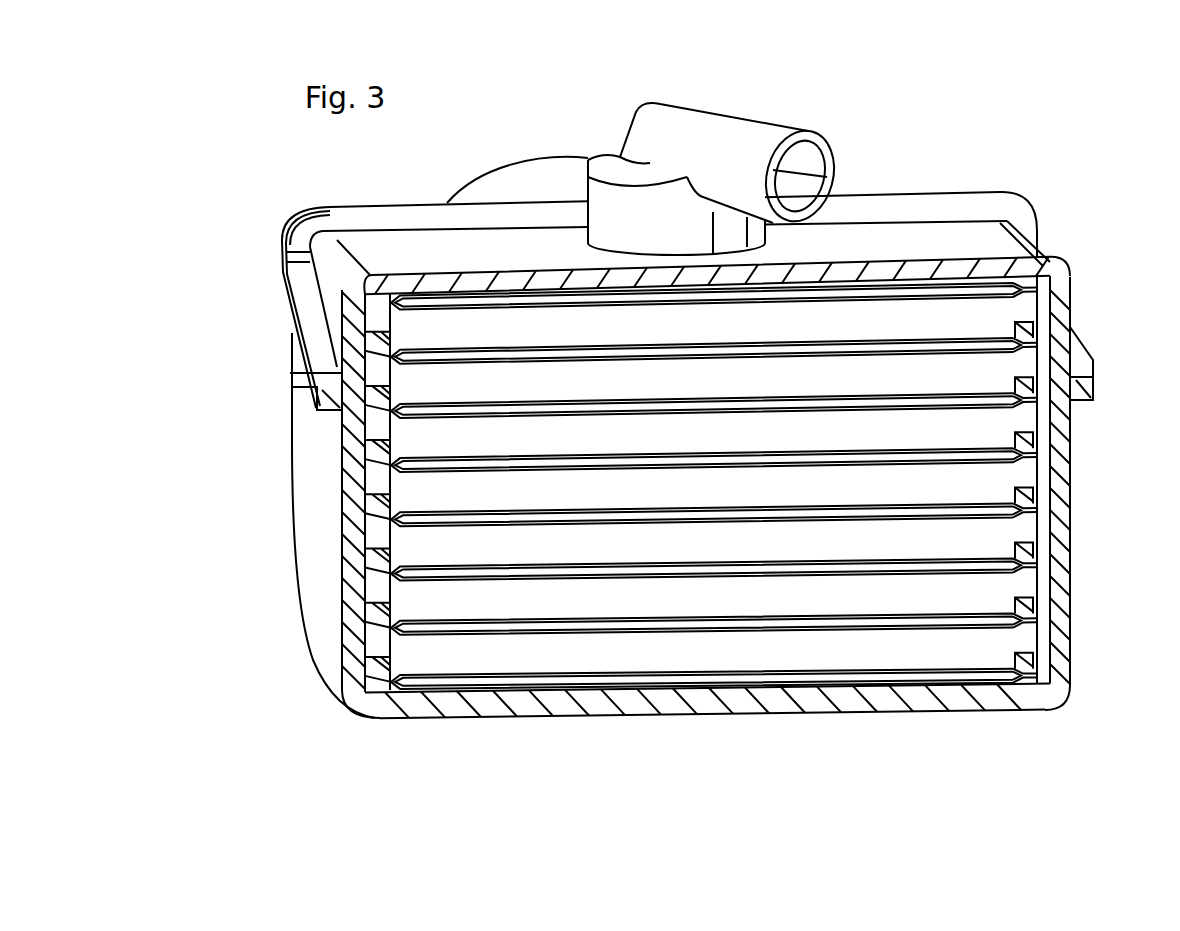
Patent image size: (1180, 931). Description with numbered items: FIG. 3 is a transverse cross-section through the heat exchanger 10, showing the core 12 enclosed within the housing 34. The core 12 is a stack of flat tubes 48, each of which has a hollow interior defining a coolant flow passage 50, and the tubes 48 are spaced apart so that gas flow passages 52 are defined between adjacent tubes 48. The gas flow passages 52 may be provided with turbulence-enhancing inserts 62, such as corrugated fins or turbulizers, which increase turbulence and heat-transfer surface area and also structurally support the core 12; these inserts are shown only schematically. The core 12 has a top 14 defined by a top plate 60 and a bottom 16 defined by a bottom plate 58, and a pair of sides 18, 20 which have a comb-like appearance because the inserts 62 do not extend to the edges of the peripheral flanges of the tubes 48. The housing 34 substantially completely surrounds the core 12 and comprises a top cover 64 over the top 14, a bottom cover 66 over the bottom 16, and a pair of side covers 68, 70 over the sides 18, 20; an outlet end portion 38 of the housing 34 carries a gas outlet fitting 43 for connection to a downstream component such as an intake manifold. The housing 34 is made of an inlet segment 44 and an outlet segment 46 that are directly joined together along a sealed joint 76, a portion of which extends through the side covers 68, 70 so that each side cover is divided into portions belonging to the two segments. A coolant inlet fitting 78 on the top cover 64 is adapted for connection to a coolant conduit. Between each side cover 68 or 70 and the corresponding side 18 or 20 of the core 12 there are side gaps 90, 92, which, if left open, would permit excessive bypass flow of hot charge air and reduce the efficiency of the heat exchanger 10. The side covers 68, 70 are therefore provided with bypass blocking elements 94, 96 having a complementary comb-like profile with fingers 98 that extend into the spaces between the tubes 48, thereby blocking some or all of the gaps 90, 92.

The heat exchanger 10 is at (1030, 136).
The core 12 is at (1035, 604).
The top 14 is at (1030, 272).
The bottom 16 is at (985, 690).
The side 18 is at (370, 557).
The side 20 is at (1035, 548).
The housing 34 is at (272, 238).
The outlet end portion 38 is at (290, 373).
The gas outlet fitting 43 is at (542, 170).
The inlet segment 44 is at (1072, 307).
The outlet segment 46 is at (1072, 455).
The flat tubes 48 is at (437, 352).
The coolant flow passage 50 is at (443, 183).
The gas flow passages 52 is at (714, 486).
The bottom plate 58 is at (840, 698).
The top plate 60 is at (945, 278).
The turbulence-enhancing inserts 62 is at (737, 333).
The top cover 64 is at (865, 233).
The bottom cover 66 is at (612, 712).
The side cover 68 is at (300, 440).
The side cover 70 is at (1072, 492).
The sealed joint 76 is at (280, 272).
The coolant inlet fitting 78 is at (678, 113).
The side gap 90 is at (372, 480).
The side gap 92 is at (1030, 418).
The bypass blocking element 94 is at (378, 426).
The bypass blocking element 96 is at (1024, 385).
The fingers 98 is at (372, 600).